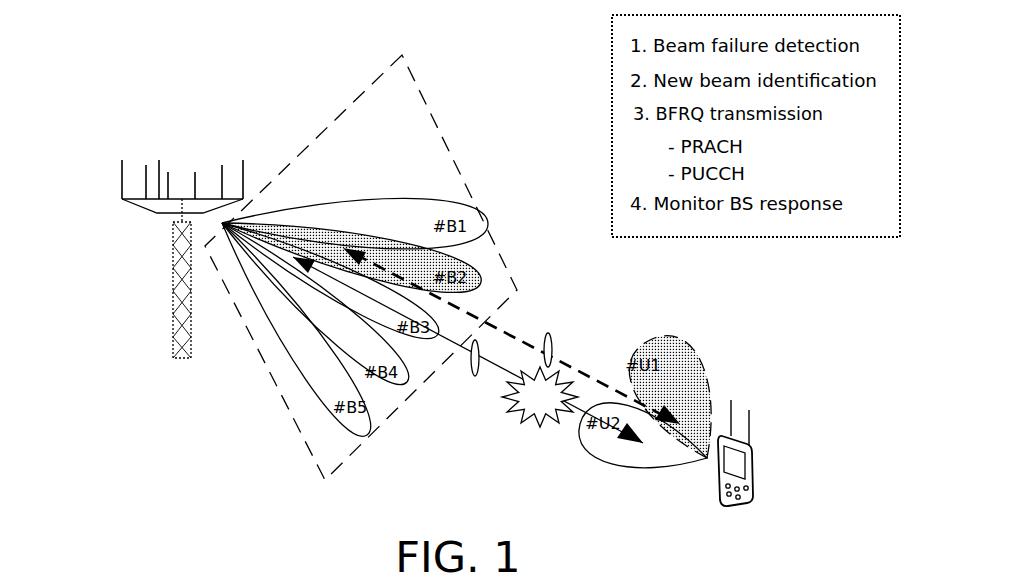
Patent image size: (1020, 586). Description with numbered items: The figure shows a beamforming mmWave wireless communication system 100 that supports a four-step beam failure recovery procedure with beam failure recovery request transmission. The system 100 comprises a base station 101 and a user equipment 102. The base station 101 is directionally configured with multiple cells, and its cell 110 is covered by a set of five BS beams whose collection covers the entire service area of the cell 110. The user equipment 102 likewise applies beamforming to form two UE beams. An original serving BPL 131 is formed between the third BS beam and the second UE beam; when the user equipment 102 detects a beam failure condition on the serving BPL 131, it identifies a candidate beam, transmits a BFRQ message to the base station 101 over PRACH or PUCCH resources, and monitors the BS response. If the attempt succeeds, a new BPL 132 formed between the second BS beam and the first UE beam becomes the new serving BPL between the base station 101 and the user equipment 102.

The beamforming wireless communication system 100 is at (143, 50).
The base station 101 is at (183, 167).
The user equipment 102 is at (745, 406).
The cell 110 is at (361, 267).
The original serving BPL 131 is at (475, 377).
The new BPL 132 is at (548, 332).